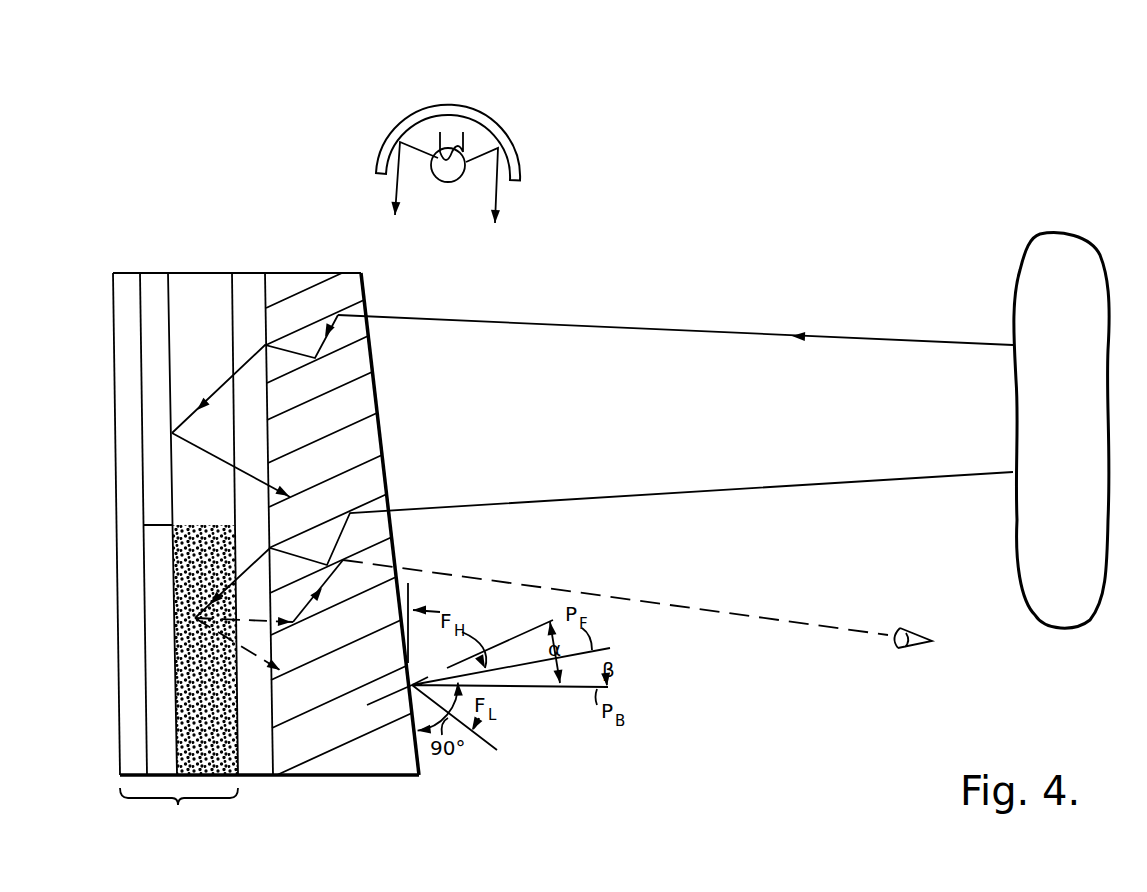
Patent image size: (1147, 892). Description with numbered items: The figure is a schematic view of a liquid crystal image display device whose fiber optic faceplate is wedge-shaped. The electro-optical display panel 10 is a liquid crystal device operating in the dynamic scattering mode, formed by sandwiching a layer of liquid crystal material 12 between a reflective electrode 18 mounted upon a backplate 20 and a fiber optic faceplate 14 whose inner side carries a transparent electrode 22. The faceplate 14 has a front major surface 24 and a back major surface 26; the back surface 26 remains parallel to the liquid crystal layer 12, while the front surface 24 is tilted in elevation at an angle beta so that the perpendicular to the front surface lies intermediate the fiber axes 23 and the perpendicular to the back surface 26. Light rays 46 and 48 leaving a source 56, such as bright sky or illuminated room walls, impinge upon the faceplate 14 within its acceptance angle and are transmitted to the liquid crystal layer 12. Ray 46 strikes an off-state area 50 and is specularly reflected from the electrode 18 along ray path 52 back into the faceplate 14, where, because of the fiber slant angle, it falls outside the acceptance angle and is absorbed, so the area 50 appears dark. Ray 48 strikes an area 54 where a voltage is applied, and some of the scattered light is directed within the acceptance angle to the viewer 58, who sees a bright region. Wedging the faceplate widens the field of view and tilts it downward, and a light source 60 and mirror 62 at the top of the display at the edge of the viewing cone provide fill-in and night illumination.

The electro-optical display panel 10 is at (179, 810).
The liquid crystal material layer 12 is at (193, 275).
The fiber optic faceplate 14 is at (307, 273).
The reflective electrode 18 is at (150, 273).
The backplate 20 is at (117, 273).
The transparent electrode 22 is at (238, 273).
The fiber axes 23 is at (525, 632).
The front major surface 24 is at (362, 272).
The back major surface 26 is at (267, 273).
The light ray 46 is at (687, 333).
The light ray 48 is at (720, 493).
The off-state liquid crystal area 50 is at (173, 405).
The ray path 52 is at (247, 471).
The on-state liquid crystal area 54 is at (177, 595).
The light source 56 is at (1093, 253).
The viewer 58 is at (924, 640).
The light source 60 is at (450, 182).
The mirror 62 is at (488, 121).